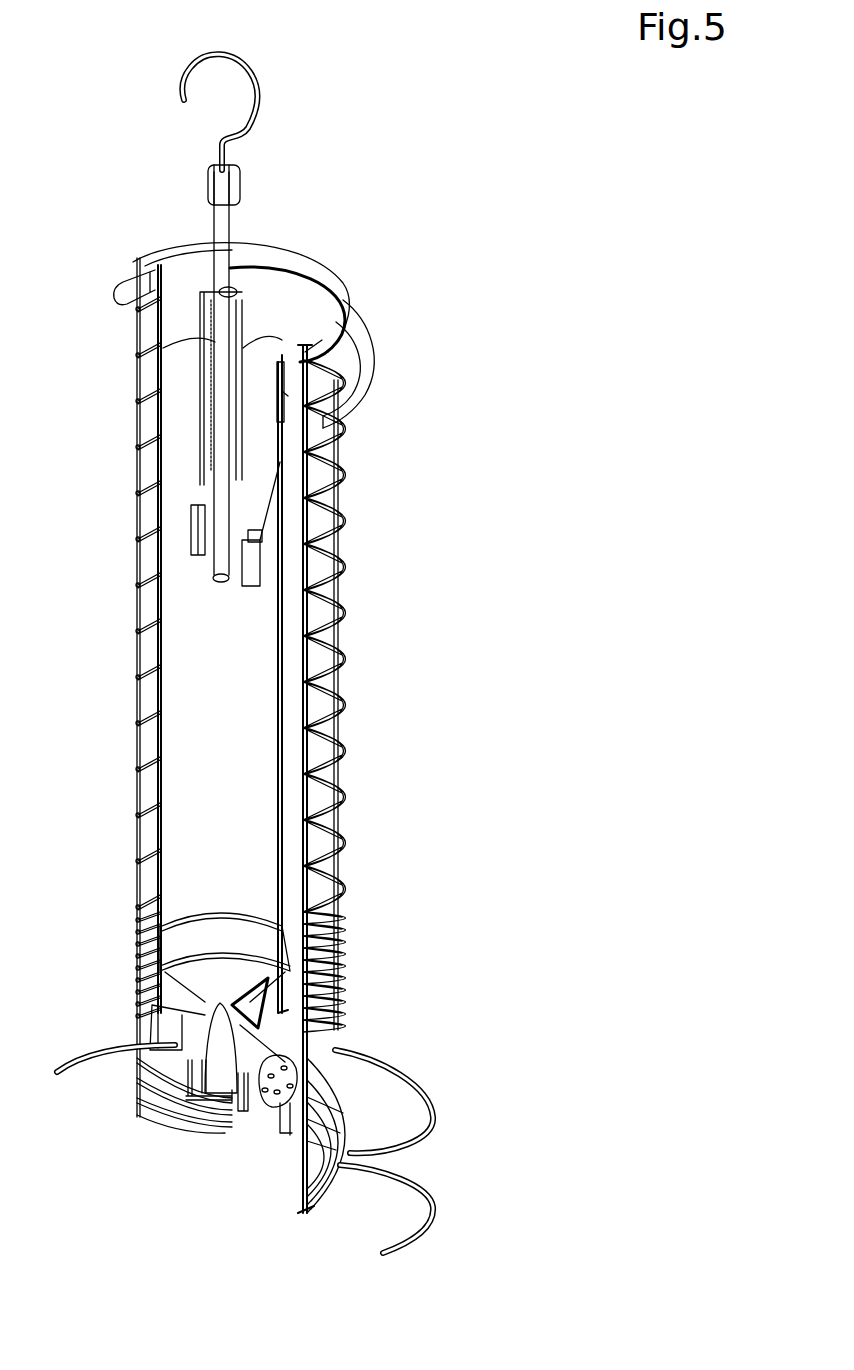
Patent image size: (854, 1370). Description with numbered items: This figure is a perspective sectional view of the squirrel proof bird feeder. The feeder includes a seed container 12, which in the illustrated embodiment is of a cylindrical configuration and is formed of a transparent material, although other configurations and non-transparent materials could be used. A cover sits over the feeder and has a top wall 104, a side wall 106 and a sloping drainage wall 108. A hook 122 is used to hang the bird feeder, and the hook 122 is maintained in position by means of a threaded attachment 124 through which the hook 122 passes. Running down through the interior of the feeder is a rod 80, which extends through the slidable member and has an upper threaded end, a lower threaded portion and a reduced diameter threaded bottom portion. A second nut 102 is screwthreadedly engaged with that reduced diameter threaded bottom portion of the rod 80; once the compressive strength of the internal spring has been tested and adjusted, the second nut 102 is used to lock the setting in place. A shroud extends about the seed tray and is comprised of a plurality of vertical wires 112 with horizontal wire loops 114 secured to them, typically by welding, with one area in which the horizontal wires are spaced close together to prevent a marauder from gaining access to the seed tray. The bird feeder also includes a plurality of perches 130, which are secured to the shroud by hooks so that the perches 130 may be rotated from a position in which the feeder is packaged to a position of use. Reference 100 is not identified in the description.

The seed container 12 is at (150, 745).
The rod 80 is at (222, 424).
The latch bracket 100 is at (210, 548).
The second nut 102 is at (215, 575).
The top wall 104 is at (328, 313).
The side wall 106 is at (328, 352).
The sloping drainage wall 108 is at (358, 352).
The vertical wires 112 is at (137, 513).
The horizontal wire loops 114 is at (342, 506).
The hook 122 is at (255, 100).
The threaded attachment 124 is at (240, 178).
The perches 130 is at (417, 1088).